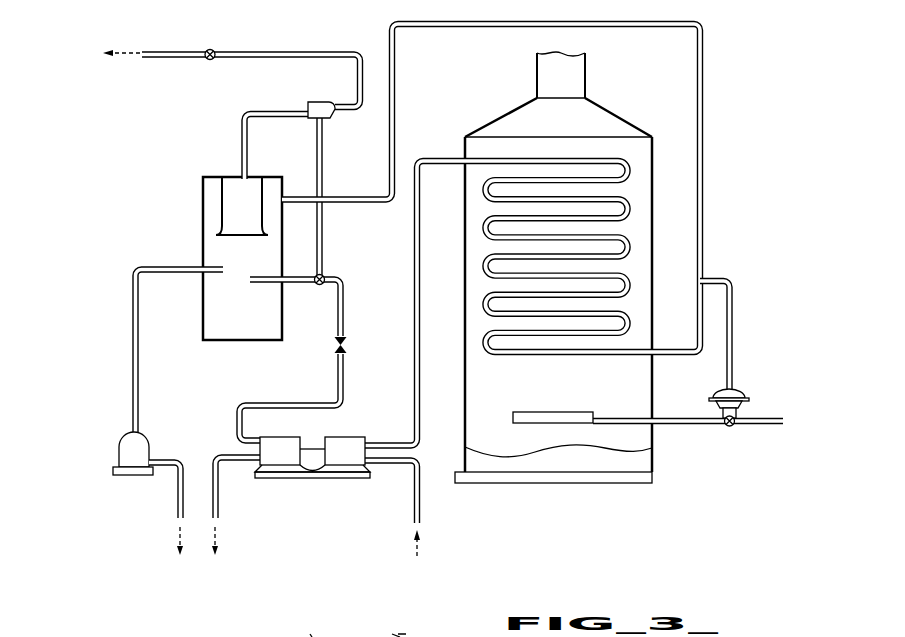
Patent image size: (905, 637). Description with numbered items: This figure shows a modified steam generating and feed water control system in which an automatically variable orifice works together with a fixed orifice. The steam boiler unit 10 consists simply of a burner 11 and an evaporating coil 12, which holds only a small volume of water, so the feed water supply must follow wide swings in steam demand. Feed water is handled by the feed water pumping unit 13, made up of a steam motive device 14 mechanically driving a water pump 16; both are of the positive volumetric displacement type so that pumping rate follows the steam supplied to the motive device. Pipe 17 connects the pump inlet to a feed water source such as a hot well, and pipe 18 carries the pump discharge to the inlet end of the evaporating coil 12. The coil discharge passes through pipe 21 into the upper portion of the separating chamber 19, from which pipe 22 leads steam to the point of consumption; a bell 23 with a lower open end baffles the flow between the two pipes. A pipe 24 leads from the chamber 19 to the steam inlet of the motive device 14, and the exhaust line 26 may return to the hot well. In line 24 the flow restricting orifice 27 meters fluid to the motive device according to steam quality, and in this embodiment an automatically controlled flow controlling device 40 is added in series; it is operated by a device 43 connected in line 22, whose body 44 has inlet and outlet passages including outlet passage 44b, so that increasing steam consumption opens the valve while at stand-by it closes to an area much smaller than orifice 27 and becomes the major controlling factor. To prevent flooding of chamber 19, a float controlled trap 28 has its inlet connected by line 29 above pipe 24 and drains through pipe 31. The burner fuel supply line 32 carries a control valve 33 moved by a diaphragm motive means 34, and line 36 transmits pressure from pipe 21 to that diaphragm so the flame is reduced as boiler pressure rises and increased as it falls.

The steam boiler unit 10 is at (500, 116).
The burner 11 is at (585, 410).
The evaporating coil 12 is at (523, 337).
The feed water pumping unit 13 is at (318, 480).
The steam motive device 14 is at (294, 437).
The water pump 16 is at (360, 437).
The pipe 17 is at (415, 507).
The pipe 18 is at (421, 405).
The separating chamber 19 is at (203, 240).
The pipe 21 is at (390, 40).
The pipe 22 is at (272, 41).
The bell 23 is at (220, 203).
The pipe 24 is at (344, 313).
The steam exhaust line 26 is at (218, 500).
The flow restricting orifice 27 is at (347, 350).
The float controlled trap 28 is at (119, 455).
The line 29 is at (133, 364).
The pipe 31 is at (178, 500).
The fuel supply line 32 is at (681, 426).
The control valve 33 is at (733, 427).
The diaphragm motive means 34 is at (741, 388).
The line 36 is at (736, 328).
The automatically controlled flow controlling device 40 is at (323, 275).
The device 43 is at (312, 102).
The body 44 is at (312, 628).
The outlet passage 44b is at (384, 636).